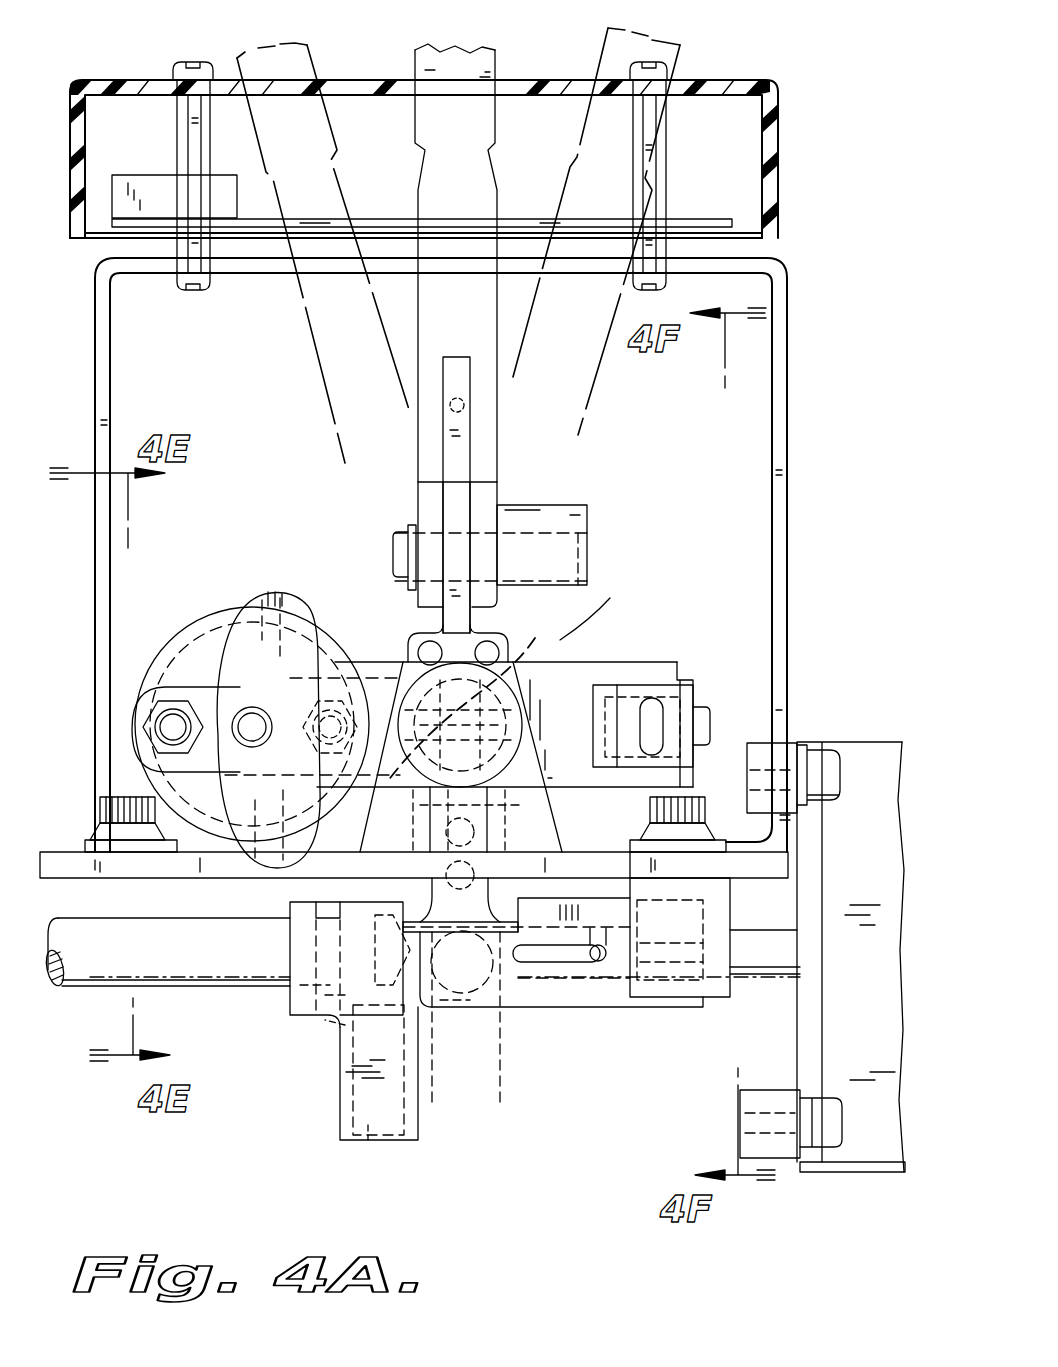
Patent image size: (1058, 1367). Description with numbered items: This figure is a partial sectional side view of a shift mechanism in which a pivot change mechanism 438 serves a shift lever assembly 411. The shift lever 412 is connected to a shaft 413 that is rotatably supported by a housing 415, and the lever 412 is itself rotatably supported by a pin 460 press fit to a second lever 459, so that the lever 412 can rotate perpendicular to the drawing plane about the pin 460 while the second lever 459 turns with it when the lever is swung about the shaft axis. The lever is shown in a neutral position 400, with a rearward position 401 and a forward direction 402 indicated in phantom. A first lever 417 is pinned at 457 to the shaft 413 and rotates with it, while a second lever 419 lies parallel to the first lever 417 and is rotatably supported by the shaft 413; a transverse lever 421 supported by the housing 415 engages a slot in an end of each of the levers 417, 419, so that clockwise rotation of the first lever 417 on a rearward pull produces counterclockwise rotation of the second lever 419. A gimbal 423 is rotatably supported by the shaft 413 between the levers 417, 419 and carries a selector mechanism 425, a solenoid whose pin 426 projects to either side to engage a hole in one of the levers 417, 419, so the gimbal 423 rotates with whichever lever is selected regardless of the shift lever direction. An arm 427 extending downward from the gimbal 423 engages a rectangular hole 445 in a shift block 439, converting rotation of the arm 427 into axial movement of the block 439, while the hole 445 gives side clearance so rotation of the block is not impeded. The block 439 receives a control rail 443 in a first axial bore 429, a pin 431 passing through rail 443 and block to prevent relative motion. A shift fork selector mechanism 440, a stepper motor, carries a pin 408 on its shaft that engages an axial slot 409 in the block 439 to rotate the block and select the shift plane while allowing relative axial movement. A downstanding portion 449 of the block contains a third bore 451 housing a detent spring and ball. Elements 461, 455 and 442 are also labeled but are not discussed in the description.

The neutral position 400 is at (440, 55).
The rearward position 401 is at (648, 48).
The forward direction 402 is at (248, 48).
The shelf plate 461 is at (700, 219).
The shift lever 412 is at (492, 438).
The pivot change mechanism 438 is at (615, 530).
The shift lever assembly 411 is at (372, 540).
The pin 460 is at (393, 556).
The selector mechanism 425 is at (222, 596).
The first lever 417 is at (158, 695).
The shaft 413 is at (420, 690).
The second lever 459 is at (580, 625).
The pin 457 is at (512, 690).
The second lever 419 is at (575, 668).
The transverse lever 421 is at (712, 718).
The shift fork selector mechanism 440 is at (840, 742).
The pin 426 is at (254, 738).
The cam follower 455 is at (385, 778).
The gimbal 423 is at (505, 842).
The housing 415 is at (108, 868).
The first axial bore 429 is at (292, 925).
The control rail 443 is at (226, 968).
The pin 431 is at (325, 1022).
The downstanding portion 449 is at (345, 1117).
The third bore 451 is at (356, 1142).
The arm 427 is at (455, 992).
The rectangular hole 445 is at (492, 1010).
The shift block 439 is at (528, 1010).
The axial slot 409 is at (570, 960).
The pin 408 is at (597, 962).
The shaft extension 442 is at (762, 975).